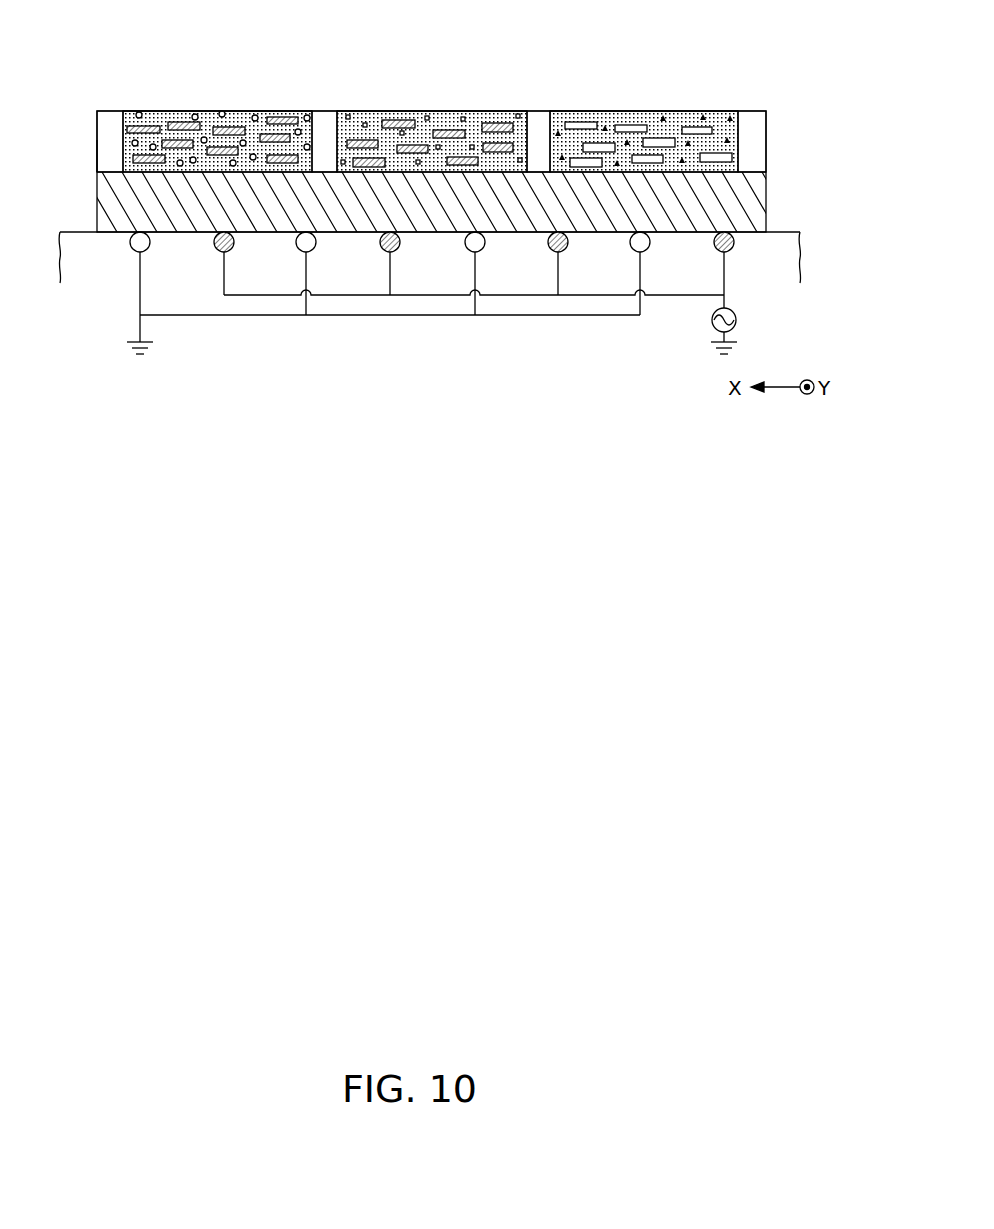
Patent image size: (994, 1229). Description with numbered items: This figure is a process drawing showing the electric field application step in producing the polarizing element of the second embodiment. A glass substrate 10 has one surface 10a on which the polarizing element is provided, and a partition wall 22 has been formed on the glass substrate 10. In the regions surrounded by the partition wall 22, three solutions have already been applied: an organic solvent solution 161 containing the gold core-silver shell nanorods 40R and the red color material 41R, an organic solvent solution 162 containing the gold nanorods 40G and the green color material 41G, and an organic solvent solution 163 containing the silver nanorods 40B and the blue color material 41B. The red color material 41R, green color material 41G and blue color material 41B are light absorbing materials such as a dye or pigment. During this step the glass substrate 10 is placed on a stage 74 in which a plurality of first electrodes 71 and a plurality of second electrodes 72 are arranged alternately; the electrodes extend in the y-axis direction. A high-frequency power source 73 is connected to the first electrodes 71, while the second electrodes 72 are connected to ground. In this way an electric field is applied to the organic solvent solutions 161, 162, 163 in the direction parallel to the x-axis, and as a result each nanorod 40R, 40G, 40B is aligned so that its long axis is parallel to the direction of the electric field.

The glass substrate 10 is at (767, 202).
The one surface 10a is at (99, 155).
The partition wall 22 is at (112, 113).
The gold core-silver shell nanorods 40R is at (211, 95).
The gold nanorods 40G is at (430, 95).
The silver nanorods 40B is at (644, 95).
The red color material 41R is at (140, 112).
The green color material 41G is at (348, 115).
The blue color material 41B is at (665, 116).
The organic solvent solution 161 is at (247, 100).
The organic solvent solution 162 is at (466, 100).
The organic solvent solution 163 is at (690, 100).
The first electrodes 71 is at (734, 246).
The second electrodes 72 is at (130, 244).
The high-frequency power source 73 is at (732, 330).
The stage 74 is at (83, 230).